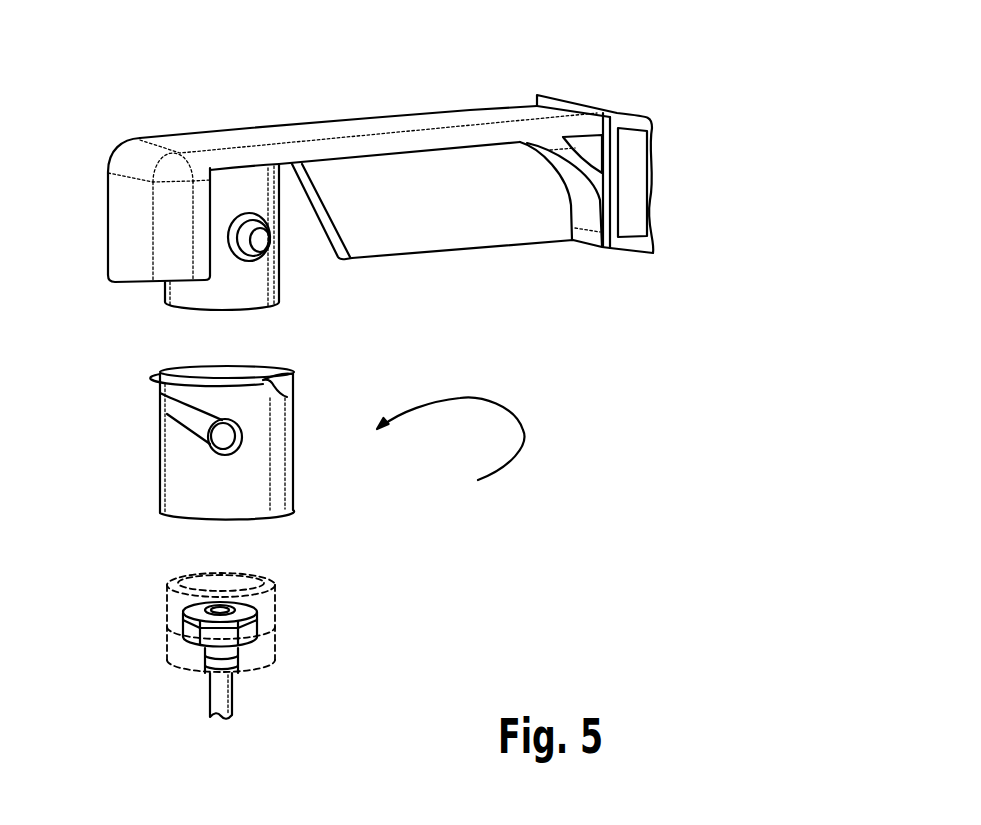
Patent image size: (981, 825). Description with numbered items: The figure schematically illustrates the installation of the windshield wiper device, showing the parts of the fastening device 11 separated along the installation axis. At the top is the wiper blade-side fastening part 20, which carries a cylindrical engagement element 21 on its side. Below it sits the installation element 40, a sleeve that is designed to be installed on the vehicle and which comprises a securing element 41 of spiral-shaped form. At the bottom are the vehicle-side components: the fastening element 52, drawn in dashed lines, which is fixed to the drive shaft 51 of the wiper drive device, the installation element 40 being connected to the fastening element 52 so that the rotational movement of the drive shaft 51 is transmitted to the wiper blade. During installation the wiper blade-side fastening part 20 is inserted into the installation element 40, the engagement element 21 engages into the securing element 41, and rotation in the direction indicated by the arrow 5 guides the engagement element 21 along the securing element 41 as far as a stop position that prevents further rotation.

The arrow 5 is at (470, 397).
The fastening device 11 is at (388, 123).
The wiper blade-side fastening part 20 is at (197, 296).
The engagement element 21 is at (262, 240).
The installation element 40 is at (177, 493).
The securing element 41 is at (170, 413).
The drive shaft 51 is at (225, 705).
The fastening element 52 is at (265, 602).